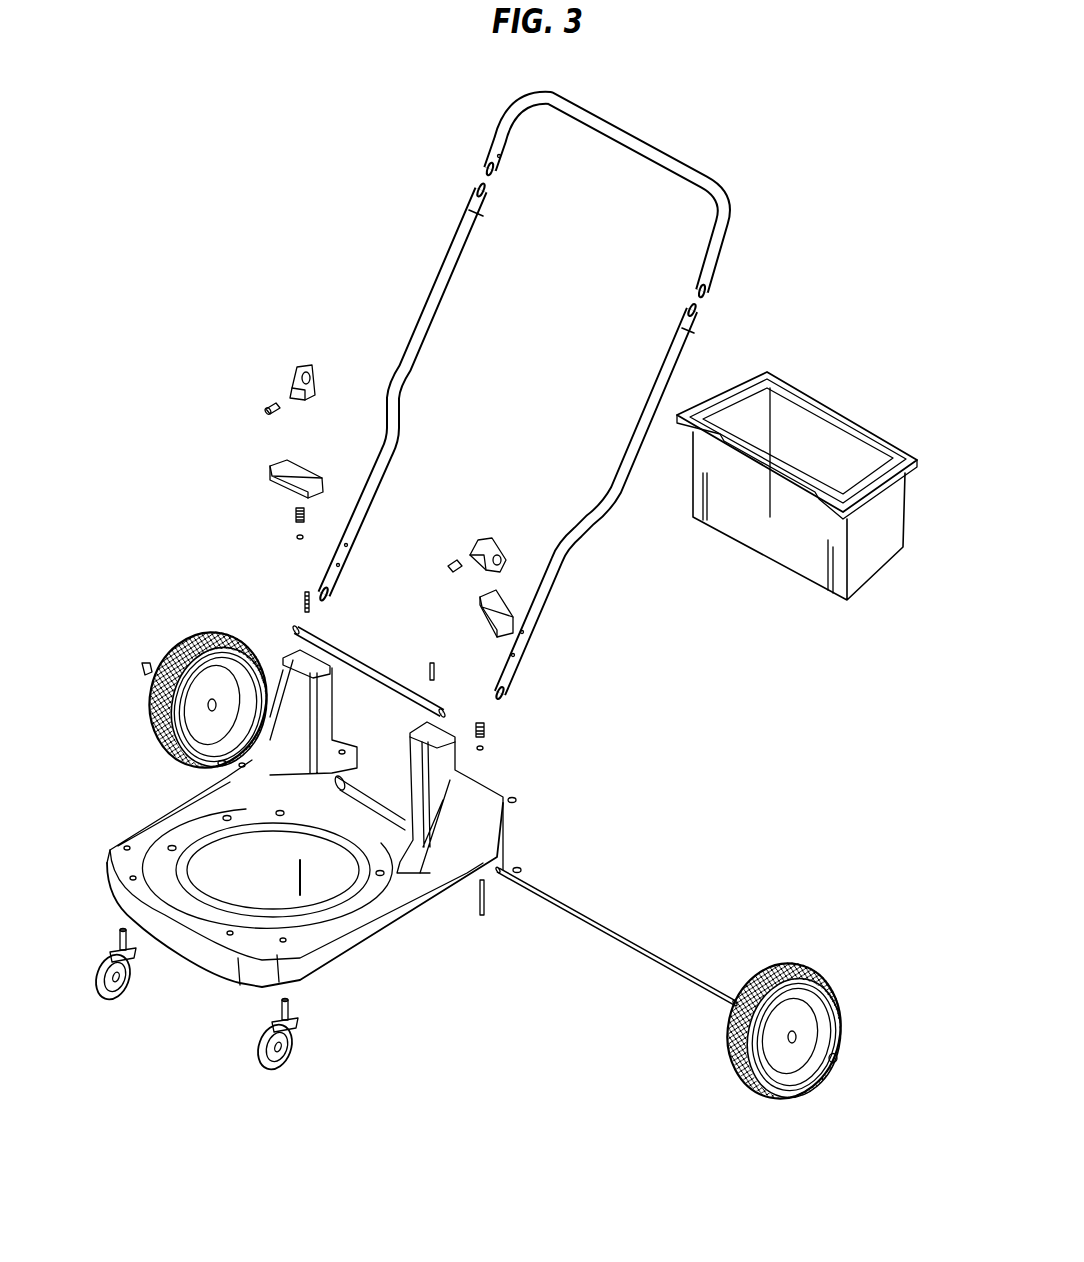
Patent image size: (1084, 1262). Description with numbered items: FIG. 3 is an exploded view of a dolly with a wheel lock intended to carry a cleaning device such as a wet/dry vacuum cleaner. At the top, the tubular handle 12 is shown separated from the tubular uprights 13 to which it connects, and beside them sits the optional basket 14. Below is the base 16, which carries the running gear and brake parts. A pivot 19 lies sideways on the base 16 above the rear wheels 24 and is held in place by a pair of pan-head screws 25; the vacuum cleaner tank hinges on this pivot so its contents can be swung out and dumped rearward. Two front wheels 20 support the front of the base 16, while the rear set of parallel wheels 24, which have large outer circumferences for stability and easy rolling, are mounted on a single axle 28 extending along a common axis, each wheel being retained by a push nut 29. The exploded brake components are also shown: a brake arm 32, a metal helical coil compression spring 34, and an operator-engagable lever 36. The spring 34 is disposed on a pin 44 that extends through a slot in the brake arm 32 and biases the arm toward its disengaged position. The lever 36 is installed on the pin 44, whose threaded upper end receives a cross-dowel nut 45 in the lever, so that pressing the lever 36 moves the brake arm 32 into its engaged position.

The tubular handle 12 is at (732, 208).
The tubular uprights 13 is at (697, 323).
The basket 14 is at (847, 410).
The base 16 is at (105, 880).
The pivot 19 is at (447, 712).
The front wheels 20 is at (290, 1062).
The rear wheels 24 is at (832, 978).
The pan-head screws 25 is at (302, 607).
The axle 28 is at (595, 912).
The push nut 29 is at (840, 1057).
The brake arm 32 is at (272, 466).
The spring 34 is at (296, 511).
The operator-engagable lever 36 is at (305, 366).
The pin 44 is at (481, 908).
The cross-dowel nut 45 is at (265, 405).